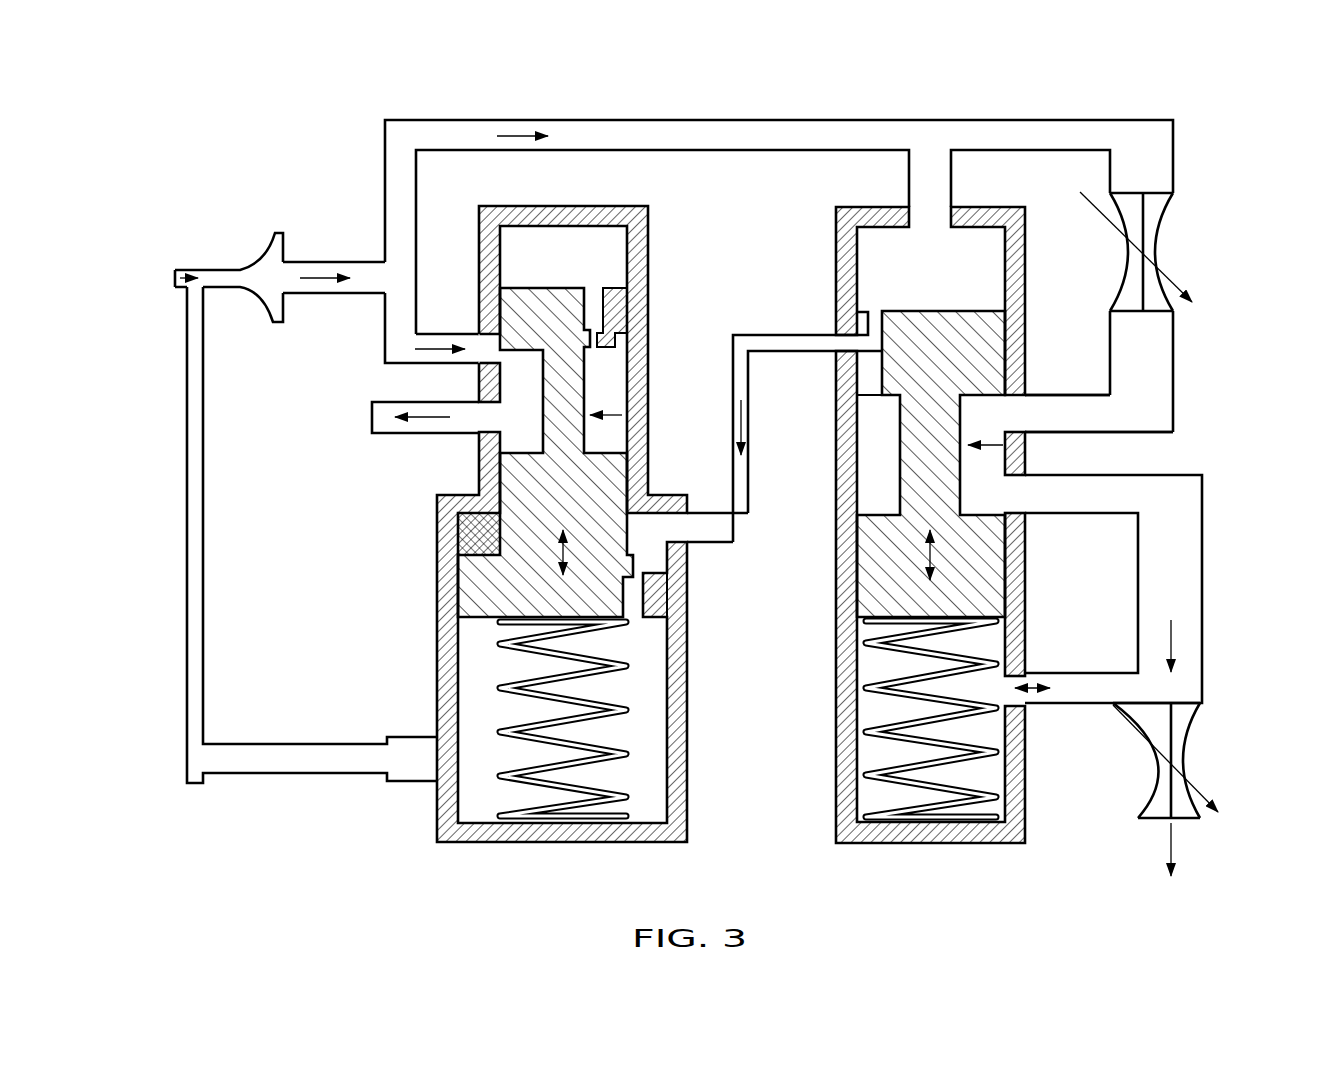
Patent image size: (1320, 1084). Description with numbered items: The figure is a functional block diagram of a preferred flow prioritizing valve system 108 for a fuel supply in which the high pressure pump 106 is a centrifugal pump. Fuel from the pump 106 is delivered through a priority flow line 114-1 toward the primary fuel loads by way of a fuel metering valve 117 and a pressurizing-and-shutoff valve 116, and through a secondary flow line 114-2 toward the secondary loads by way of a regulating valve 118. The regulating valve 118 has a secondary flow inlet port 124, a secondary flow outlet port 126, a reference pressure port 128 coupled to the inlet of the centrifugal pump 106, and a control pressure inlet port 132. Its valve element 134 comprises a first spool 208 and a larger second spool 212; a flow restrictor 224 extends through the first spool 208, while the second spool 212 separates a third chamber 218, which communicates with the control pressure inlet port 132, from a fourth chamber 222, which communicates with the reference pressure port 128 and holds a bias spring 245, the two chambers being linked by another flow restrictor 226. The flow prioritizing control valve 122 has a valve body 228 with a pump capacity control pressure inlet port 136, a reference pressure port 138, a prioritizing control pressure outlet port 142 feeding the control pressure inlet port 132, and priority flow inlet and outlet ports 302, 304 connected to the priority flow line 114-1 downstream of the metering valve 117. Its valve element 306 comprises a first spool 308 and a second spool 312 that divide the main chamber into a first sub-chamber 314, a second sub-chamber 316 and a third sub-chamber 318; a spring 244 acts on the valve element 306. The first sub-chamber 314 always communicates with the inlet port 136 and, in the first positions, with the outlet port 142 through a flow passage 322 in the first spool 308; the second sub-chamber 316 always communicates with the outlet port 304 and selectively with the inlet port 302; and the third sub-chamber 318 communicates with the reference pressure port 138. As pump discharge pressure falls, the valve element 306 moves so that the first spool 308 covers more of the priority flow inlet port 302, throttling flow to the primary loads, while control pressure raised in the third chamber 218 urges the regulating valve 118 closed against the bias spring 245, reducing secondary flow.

The flow prioritizing valve system 108 is at (272, 157).
The high pressure pump 106 is at (266, 258).
The priority flow line 114-1 is at (930, 120).
The secondary flow line 114-2 is at (464, 402).
The pressurizing-and-shutoff valve 116 is at (1186, 772).
The fuel metering valve 117 is at (1160, 247).
The regulating valve 118 is at (655, 265).
The flow prioritizing control valve 122 is at (832, 230).
The secondary flow inlet port 124 is at (479, 333).
The secondary flow outlet port 126 is at (462, 434).
The reference pressure port 128 is at (405, 740).
The control pressure inlet port 132 is at (695, 542).
The valve element 134 is at (615, 418).
The pump capacity control pressure inlet port 136 is at (945, 203).
The reference pressure port 138 is at (1040, 712).
The prioritizing control pressure outlet port 142 is at (815, 352).
The first spool 208 is at (550, 300).
The second spool 212 is at (655, 603).
The third chamber 218 is at (668, 505).
The fourth chamber 222 is at (650, 800).
The flow restrictor 224 is at (598, 340).
The flow restrictor 226 is at (645, 563).
The valve body 228 is at (1027, 240).
The spring 244 is at (960, 823).
The bias spring 245 is at (618, 752).
The priority flow inlet port 302 is at (1022, 410).
The priority flow outlet port 304 is at (1020, 497).
The valve element 306 is at (1008, 452).
The first spool 308 is at (935, 326).
The second spool 312 is at (1000, 596).
The first sub-chamber 314 is at (891, 262).
The second sub-chamber 316 is at (866, 456).
The third sub-chamber 318 is at (862, 664).
The flow passage 322 is at (868, 326).